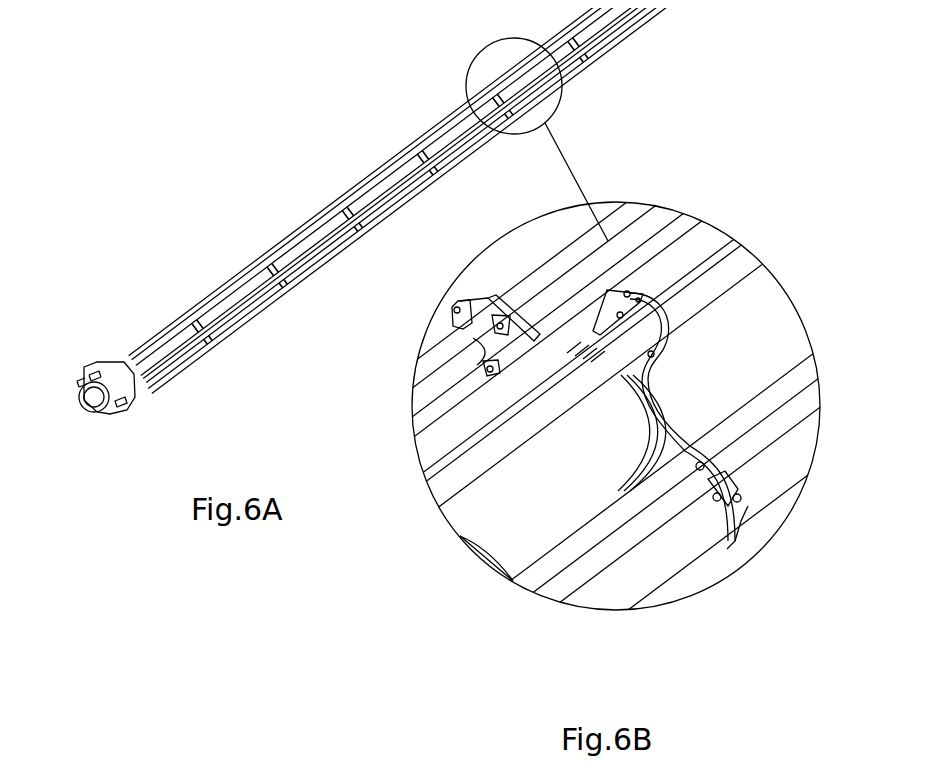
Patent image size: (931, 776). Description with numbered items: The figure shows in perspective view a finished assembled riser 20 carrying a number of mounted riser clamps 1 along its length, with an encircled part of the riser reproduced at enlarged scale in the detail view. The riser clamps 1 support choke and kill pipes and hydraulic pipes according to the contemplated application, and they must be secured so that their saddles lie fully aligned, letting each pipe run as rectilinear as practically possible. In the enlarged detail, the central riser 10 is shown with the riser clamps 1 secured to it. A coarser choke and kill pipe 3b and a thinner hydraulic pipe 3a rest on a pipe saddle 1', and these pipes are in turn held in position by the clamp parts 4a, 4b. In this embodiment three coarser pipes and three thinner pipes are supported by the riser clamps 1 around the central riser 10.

In FIG. 6A, the riser clamp 1 is at (432, 200).
In FIG. 6B, the pipe saddle 1' is at (746, 421).
In FIG. 6B, the hydraulic pipe 3a is at (807, 398).
In FIG. 6B, the choke and kill pipe 3b is at (785, 468).
In FIG. 6B, the clamp part 4a is at (739, 492).
In FIG. 6B, the clamp part 4b is at (732, 535).
In FIG. 6B, the central riser 10 is at (601, 468).
In FIG. 6A, the riser 20 is at (96, 346).